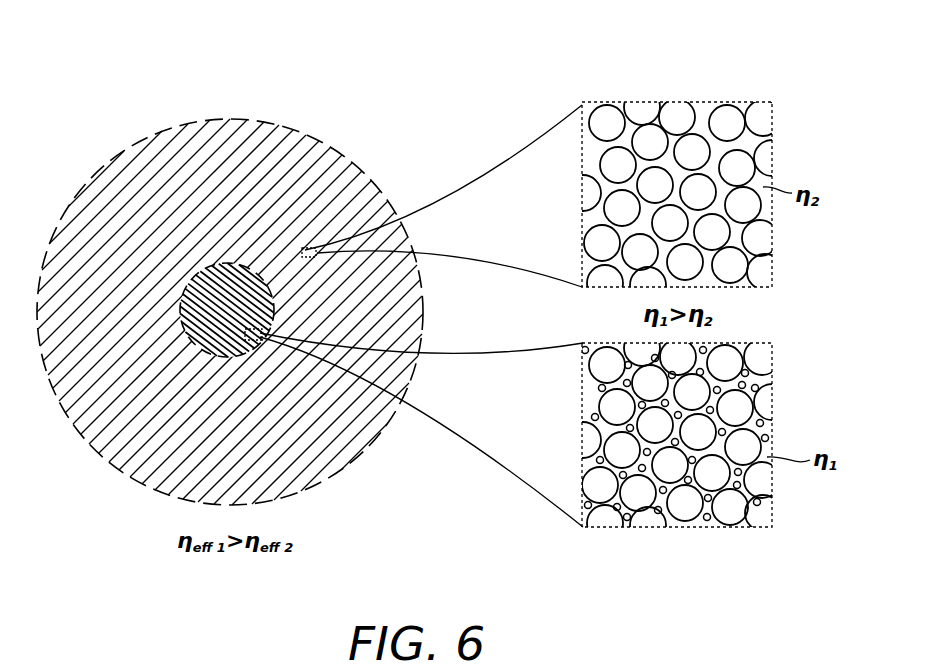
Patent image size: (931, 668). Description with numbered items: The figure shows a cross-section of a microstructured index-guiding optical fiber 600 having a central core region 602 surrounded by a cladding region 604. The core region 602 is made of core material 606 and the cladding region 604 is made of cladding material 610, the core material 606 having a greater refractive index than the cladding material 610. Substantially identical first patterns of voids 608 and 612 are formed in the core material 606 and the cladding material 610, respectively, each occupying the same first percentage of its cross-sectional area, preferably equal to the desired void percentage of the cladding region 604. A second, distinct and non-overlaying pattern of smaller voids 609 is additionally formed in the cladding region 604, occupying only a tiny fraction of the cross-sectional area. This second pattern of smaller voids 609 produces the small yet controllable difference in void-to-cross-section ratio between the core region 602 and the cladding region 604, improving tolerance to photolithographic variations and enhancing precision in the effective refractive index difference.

The microstructured index-guiding optical fiber 600 is at (93, 170).
The core region 602 is at (186, 314).
The cladding region 604 is at (135, 442).
The core material 606 is at (757, 378).
The first pattern of voids in core material 608 is at (721, 436).
The smaller voids 609 is at (757, 502).
The cladding material 610 is at (709, 173).
The first pattern of voids in cladding material 612 is at (737, 150).